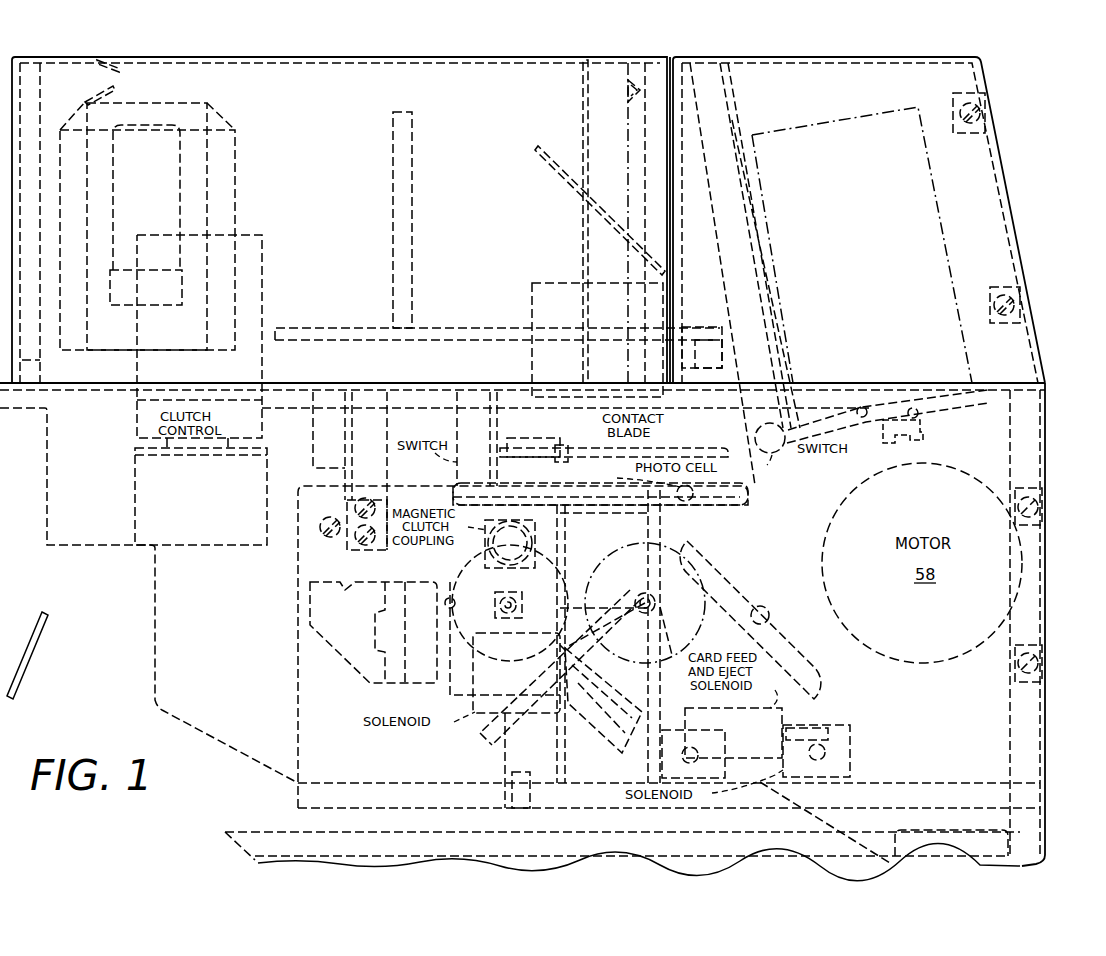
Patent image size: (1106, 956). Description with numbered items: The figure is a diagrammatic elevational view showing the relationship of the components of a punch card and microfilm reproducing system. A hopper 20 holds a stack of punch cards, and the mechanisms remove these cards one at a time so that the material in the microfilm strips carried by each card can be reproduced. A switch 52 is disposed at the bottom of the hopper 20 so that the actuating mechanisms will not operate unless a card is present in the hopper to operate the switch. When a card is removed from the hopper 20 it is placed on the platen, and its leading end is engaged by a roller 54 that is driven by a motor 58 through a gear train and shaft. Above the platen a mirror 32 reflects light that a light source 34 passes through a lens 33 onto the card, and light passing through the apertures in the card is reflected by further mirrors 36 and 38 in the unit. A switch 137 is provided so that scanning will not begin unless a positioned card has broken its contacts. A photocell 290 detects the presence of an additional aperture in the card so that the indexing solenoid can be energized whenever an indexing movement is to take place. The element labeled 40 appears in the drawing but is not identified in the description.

The hopper 20 is at (938, 212).
The mirror 32 is at (560, 185).
The lens 33 is at (412, 187).
The light source 34 is at (180, 170).
The mirror 36 is at (590, 748).
The mirror 38 is at (36, 658).
The sensing block 40 is at (557, 282).
The switch 52 is at (920, 420).
The roller 54 is at (771, 454).
The motor 58 is at (922, 563).
The switch 137 is at (557, 438).
The photocell 290 is at (600, 488).